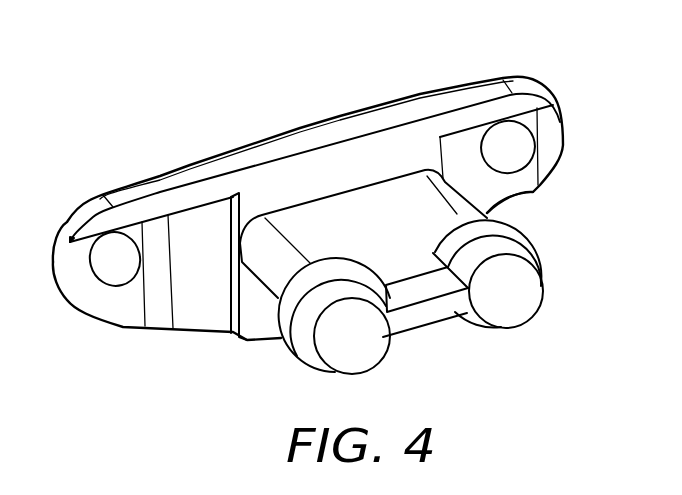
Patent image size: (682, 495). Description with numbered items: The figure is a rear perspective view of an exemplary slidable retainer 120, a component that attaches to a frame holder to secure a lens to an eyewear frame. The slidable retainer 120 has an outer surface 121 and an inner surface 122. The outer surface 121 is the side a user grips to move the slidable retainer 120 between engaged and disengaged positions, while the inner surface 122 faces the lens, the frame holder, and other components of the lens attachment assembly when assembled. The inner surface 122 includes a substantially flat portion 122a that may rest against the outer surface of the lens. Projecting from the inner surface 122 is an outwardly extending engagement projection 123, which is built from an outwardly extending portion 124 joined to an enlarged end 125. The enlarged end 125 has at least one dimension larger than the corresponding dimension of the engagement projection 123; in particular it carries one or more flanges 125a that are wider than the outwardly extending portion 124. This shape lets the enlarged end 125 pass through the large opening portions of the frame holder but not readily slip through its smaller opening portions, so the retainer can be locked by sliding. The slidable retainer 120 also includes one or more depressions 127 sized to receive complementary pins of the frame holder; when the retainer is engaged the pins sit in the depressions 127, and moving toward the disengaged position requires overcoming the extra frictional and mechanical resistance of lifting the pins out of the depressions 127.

The slidable retainer 120 is at (104, 104).
The outer surface 121 is at (343, 113).
The inner surface 122 is at (424, 147).
The substantially flat portion 122a is at (393, 150).
The outwardly extending engagement projection 123 is at (277, 305).
The outwardly extending portion 124 is at (312, 233).
The enlarged end 125 is at (520, 292).
The flange 125a is at (532, 190).
The depression 127 is at (107, 268).